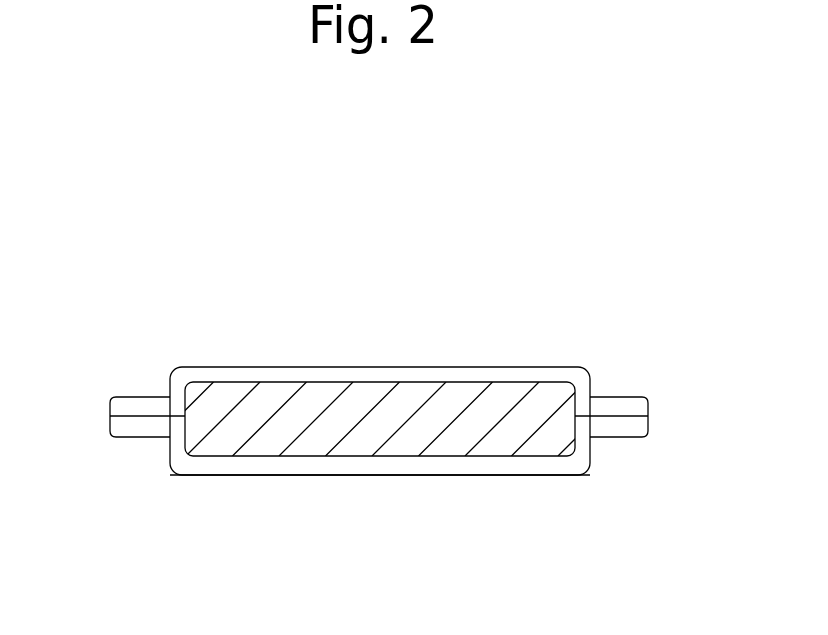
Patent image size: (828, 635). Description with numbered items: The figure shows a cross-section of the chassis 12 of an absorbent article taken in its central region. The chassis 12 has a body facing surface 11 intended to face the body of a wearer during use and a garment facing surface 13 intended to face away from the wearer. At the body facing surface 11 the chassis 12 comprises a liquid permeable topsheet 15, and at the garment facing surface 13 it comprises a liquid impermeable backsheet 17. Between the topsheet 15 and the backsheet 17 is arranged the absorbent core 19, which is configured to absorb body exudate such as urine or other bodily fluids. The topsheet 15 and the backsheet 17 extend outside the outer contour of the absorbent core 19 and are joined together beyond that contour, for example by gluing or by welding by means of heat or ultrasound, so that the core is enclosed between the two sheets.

The chassis 12 is at (371, 377).
The body facing surface 11 is at (504, 366).
The garment facing surface 13 is at (349, 475).
The absorbent core 19 is at (222, 396).
The liquid permeable topsheet 15 is at (618, 397).
The liquid impermeable backsheet 17 is at (603, 427).